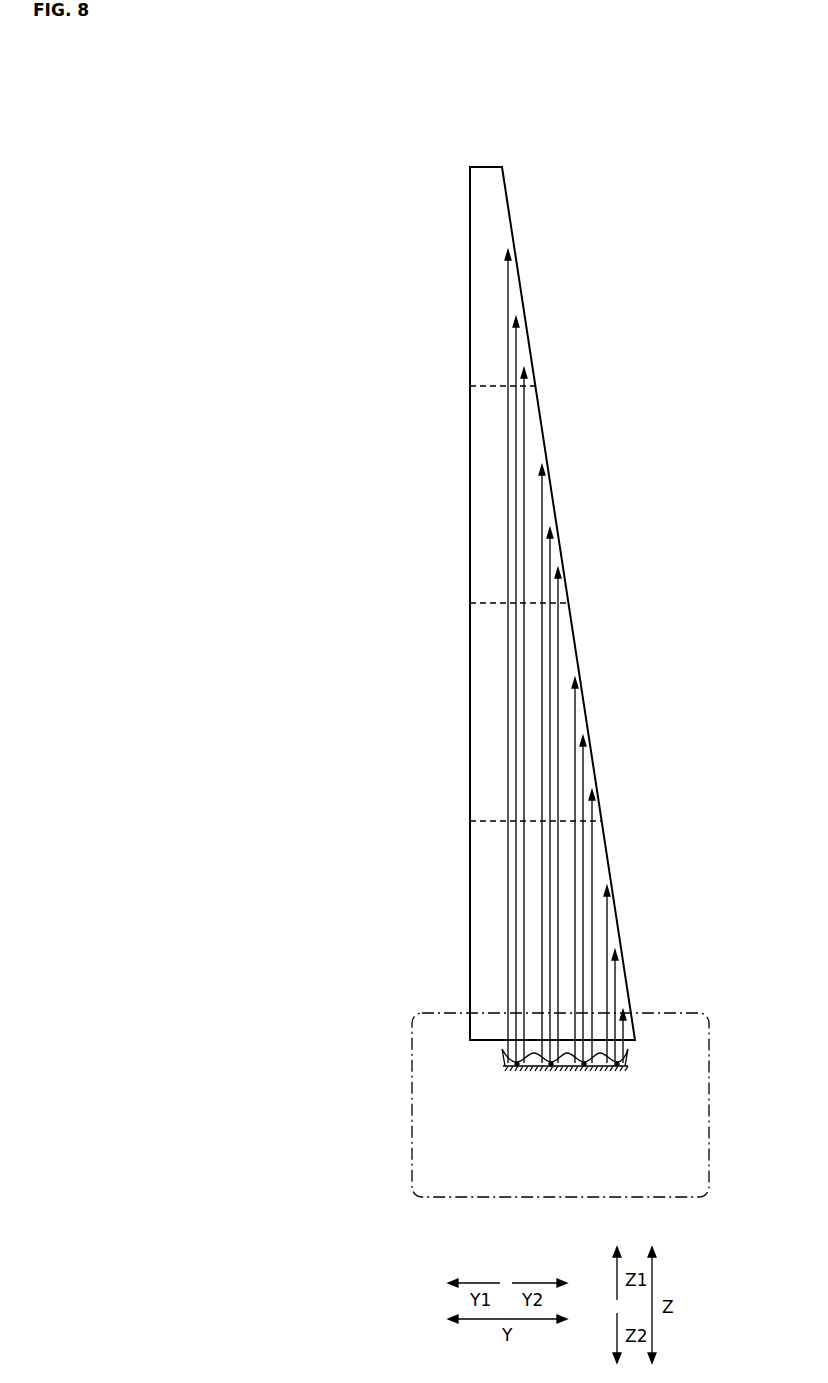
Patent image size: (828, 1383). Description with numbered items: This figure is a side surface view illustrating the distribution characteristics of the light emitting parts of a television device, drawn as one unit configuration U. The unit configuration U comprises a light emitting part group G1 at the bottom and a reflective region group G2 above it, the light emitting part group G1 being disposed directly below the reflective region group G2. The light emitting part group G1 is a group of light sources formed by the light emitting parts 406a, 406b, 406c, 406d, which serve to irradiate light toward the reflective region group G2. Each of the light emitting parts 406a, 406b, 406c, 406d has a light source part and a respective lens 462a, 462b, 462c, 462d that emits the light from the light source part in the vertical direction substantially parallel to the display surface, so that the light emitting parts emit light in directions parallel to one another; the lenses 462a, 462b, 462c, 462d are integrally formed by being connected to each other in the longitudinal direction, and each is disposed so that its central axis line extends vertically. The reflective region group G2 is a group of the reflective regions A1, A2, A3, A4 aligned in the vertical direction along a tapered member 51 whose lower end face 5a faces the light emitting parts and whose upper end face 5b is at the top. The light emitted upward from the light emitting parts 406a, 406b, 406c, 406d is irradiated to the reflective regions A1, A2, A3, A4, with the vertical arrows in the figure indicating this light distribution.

The unit configuration U is at (340, 213).
The light guide plate 51 is at (510, 205).
The top end face 5b is at (495, 166).
The light incident face 5a is at (630, 1016).
The reflective region group G2 is at (599, 329).
The reflective region A4 is at (519, 291).
The reflective region A3 is at (553, 496).
The reflective region A2 is at (583, 700).
The reflective region A1 is at (614, 907).
The light emitting part group G1 is at (433, 1203).
The lens 462a is at (619, 1062).
The lens 462b is at (586, 1062).
The lens 462c is at (510, 1050).
The lens 462d is at (513, 1064).
The light emitting part 406a is at (629, 1083).
The light emitting part 406b is at (594, 1089).
The light emitting part 406c is at (542, 1084).
The light emitting part 406d is at (502, 1076).